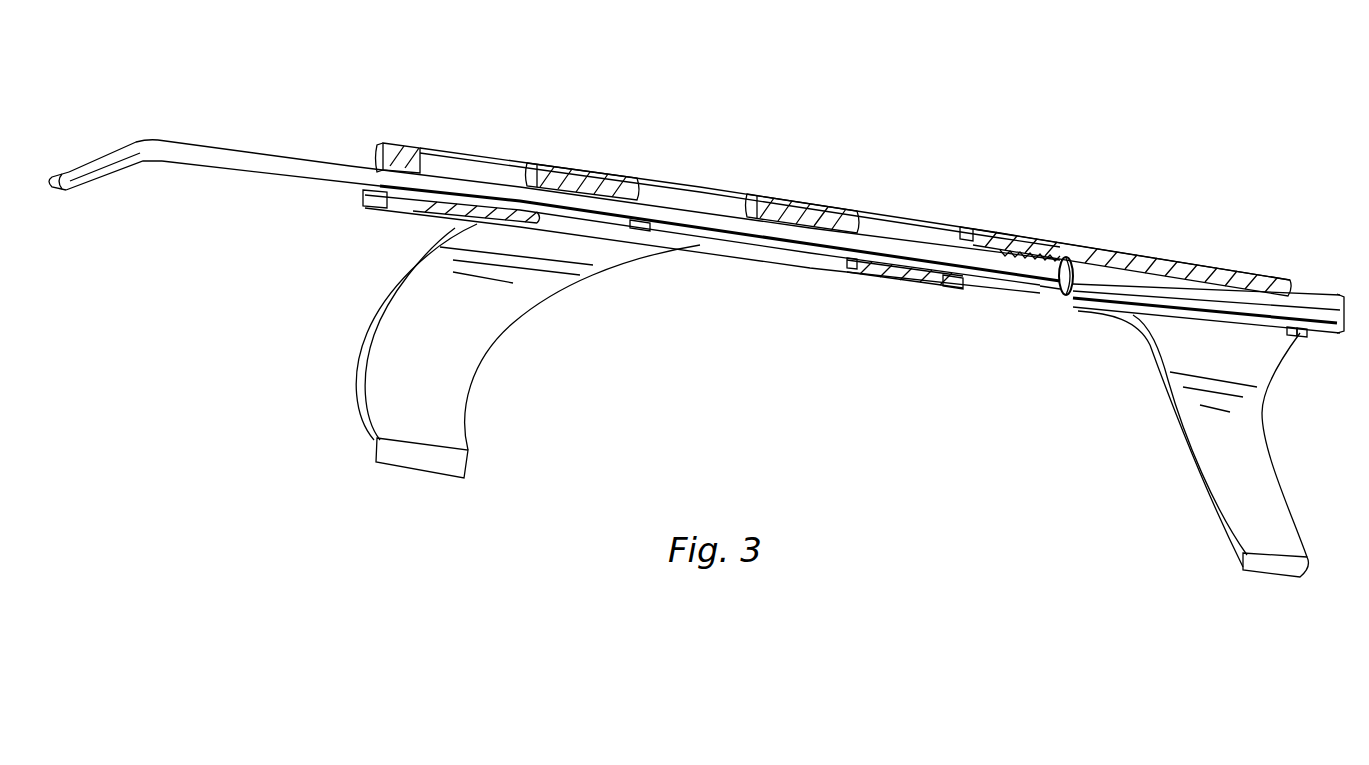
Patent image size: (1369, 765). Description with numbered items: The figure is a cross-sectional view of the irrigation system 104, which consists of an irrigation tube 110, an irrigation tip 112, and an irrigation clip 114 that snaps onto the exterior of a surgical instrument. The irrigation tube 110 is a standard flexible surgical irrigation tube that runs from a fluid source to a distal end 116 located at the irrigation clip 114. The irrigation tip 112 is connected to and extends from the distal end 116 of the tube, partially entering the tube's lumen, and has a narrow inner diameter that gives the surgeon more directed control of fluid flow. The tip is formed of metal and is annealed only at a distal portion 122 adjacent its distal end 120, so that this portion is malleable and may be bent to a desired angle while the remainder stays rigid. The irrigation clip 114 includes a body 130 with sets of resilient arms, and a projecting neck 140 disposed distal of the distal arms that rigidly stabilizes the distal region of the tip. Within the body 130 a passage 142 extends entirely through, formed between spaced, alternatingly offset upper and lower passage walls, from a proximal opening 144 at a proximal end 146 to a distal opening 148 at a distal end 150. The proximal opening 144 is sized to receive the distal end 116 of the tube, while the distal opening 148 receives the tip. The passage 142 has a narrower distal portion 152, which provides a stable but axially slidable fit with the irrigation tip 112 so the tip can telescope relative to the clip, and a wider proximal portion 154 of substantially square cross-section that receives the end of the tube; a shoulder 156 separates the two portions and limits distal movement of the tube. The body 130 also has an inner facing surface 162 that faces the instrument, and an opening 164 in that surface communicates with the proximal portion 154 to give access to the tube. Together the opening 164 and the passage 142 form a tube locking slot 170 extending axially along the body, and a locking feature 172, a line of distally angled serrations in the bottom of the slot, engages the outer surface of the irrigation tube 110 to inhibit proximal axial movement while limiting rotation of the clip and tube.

The irrigation system 104 is at (945, 104).
The irrigation tube 110 is at (1315, 292).
The irrigation tip 112 is at (282, 150).
The irrigation clip 114 is at (818, 203).
The distal end of the irrigation tube 116 is at (1095, 256).
The distal end of the irrigation tip 120 is at (62, 194).
The distal portion of the irrigation tip 122 is at (158, 143).
The body 130 is at (785, 270).
The projecting neck 140 is at (402, 143).
The passage 142 is at (583, 227).
The proximal opening 144 is at (1293, 338).
The proximal end 146 is at (1312, 337).
The distal opening 148 is at (380, 210).
The distal end 150 is at (378, 156).
The distal portion of the passage 152 is at (594, 182).
The proximal portion of the passage 154 is at (942, 255).
The shoulder 156 is at (960, 290).
The inner facing surface 162 is at (882, 282).
The opening 164 is at (718, 190).
The tube locking slot 170 is at (1050, 293).
The locking feature 172 is at (1062, 262).